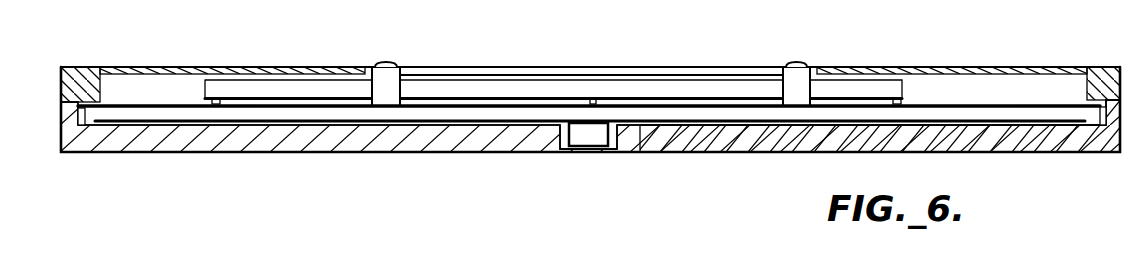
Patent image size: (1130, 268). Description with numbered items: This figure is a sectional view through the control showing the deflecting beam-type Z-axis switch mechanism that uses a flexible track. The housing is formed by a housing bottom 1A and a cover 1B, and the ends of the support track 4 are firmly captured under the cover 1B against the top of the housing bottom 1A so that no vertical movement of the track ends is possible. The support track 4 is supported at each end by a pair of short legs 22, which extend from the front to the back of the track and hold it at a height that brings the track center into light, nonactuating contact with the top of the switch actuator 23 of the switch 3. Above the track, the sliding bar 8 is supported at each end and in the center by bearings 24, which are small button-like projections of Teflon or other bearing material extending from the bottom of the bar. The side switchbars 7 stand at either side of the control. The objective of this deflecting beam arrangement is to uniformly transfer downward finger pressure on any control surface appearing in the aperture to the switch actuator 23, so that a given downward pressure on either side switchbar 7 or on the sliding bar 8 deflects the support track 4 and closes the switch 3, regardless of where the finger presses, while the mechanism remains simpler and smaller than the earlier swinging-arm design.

The housing bottom 1A is at (84, 140).
The cover 1B is at (75, 80).
The switch 3 is at (572, 128).
The support track 4 is at (165, 116).
The side switchbar 7 is at (387, 62).
The sliding bar 8 is at (454, 88).
The short legs 22 is at (86, 126).
The switch actuator 23 is at (599, 128).
The bearings 24 is at (212, 101).